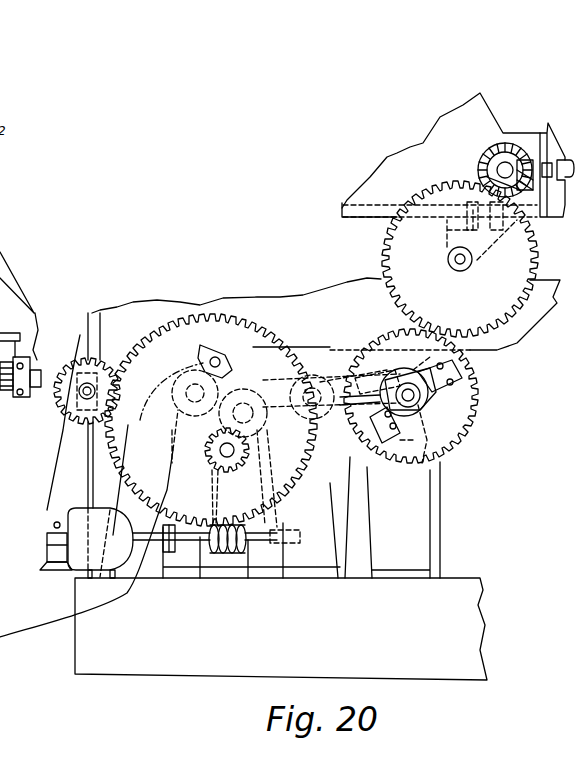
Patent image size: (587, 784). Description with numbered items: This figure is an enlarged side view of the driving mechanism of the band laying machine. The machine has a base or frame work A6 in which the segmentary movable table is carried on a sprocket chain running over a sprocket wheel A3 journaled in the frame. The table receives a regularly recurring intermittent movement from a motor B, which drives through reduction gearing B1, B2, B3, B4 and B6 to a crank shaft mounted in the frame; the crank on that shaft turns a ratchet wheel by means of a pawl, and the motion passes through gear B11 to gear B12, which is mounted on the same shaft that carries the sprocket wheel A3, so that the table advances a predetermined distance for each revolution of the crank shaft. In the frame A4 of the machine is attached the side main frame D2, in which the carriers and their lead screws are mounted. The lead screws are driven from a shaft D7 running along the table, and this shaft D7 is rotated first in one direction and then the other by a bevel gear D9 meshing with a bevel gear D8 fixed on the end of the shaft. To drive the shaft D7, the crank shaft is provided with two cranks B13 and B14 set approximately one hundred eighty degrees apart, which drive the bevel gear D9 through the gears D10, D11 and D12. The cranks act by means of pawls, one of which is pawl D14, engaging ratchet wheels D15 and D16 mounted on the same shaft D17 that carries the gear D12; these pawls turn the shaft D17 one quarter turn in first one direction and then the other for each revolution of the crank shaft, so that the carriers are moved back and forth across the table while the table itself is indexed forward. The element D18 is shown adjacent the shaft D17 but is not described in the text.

The side main frame D2 is at (440, 118).
The bevel gear D9 is at (489, 162).
The bevel gear D8 is at (530, 158).
The shaft D7 is at (30, 363).
The gear D10 is at (483, 168).
The gear D11 is at (512, 315).
The ratchet wheel D15 is at (405, 370).
The crank B13 is at (373, 377).
The reduction gear B6 is at (298, 372).
The reduction gear B4 is at (233, 393).
The gear B11 is at (191, 313).
The frame A4 is at (133, 303).
The gear B12 is at (101, 358).
The sprocket wheel A3 is at (47, 432).
The reduction gear B3 is at (207, 447).
The motor B is at (55, 523).
The reduction gear B2 is at (47, 530).
The base or frame work A6 is at (75, 653).
The reduction gear B1 is at (220, 553).
The plate D18 is at (430, 400).
The shaft D17 is at (425, 410).
The ratchet wheel D16 is at (423, 417).
The gear D12 is at (400, 423).
The pawl D14 is at (407, 427).
The crank B14 is at (360, 423).